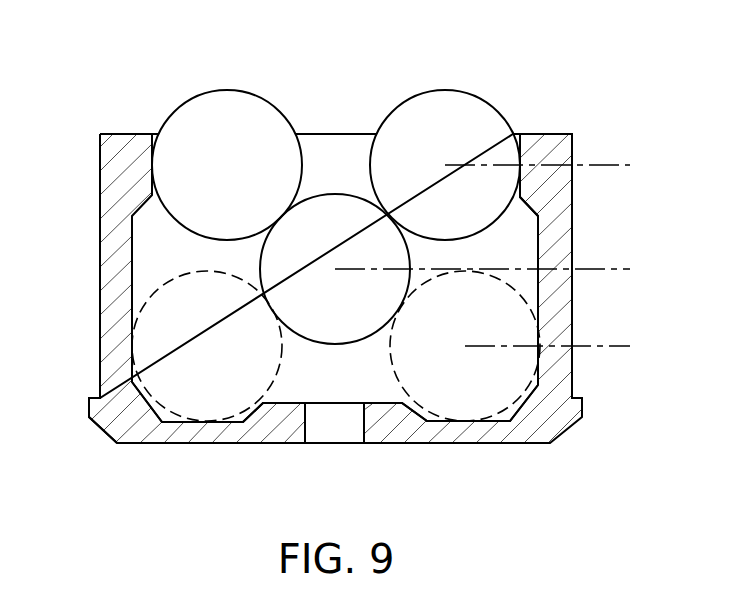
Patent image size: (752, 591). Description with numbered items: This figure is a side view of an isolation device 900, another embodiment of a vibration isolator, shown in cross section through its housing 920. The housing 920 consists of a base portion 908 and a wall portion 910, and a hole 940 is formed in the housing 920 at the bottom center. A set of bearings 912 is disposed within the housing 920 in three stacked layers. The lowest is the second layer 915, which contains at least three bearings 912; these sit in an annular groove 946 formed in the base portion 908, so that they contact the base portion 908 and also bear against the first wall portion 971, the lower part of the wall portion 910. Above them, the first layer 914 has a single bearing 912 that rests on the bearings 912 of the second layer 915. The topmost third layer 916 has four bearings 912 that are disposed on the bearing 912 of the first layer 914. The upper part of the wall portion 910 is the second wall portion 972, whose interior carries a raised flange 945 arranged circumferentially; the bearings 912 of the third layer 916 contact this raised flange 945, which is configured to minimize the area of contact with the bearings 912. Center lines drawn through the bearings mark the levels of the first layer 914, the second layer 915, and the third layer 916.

The isolation device 900 is at (523, 75).
The base portion 908 is at (448, 432).
The wall portion 910 is at (102, 233).
The bearings 912 is at (201, 212).
The first layer 914 is at (612, 270).
The second layer 915 is at (612, 348).
The third layer 916 is at (612, 163).
The housing 920 is at (102, 340).
The hole 940 is at (305, 430).
The raised flange 945 is at (520, 187).
The annular groove 946 is at (198, 423).
The first wall portion 971 is at (102, 290).
The second wall portion 972 is at (120, 170).